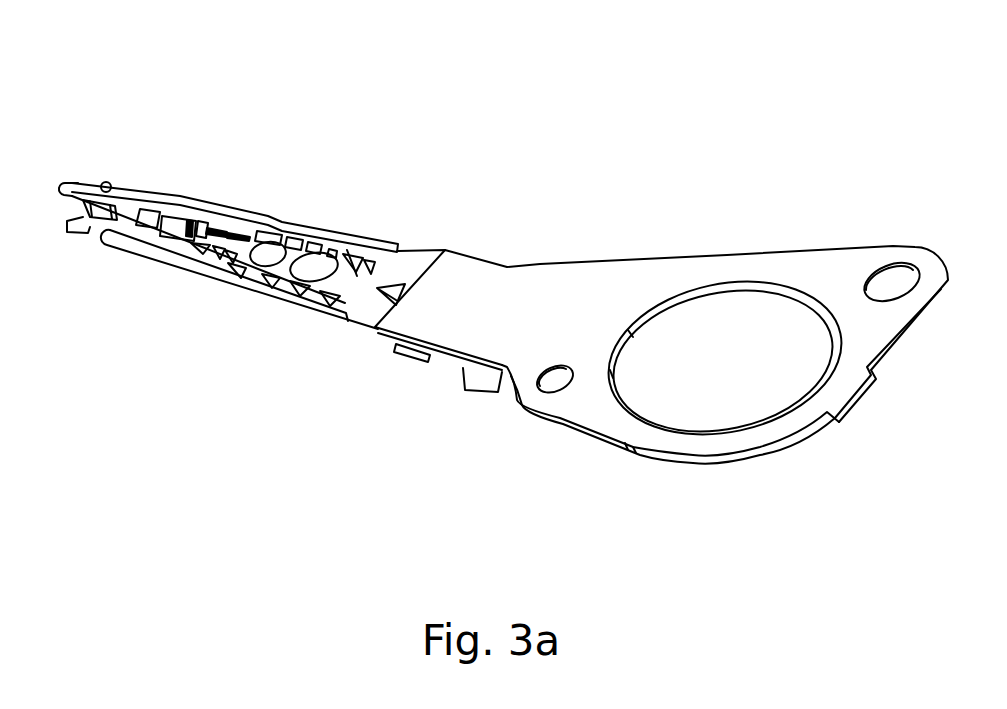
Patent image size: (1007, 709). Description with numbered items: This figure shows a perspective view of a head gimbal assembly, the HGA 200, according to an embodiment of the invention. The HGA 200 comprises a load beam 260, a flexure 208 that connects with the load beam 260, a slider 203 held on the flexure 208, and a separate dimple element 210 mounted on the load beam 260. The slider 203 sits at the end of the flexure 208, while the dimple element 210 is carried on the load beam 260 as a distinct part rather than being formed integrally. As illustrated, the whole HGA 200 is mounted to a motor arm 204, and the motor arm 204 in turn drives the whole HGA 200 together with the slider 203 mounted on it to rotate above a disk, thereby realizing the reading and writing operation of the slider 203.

The HGA 200 is at (257, 194).
The slider 203 is at (118, 252).
The motor arm 204 is at (480, 302).
The flexure 208 is at (213, 277).
The dimple element 210 is at (155, 193).
The load beam 260 is at (342, 238).